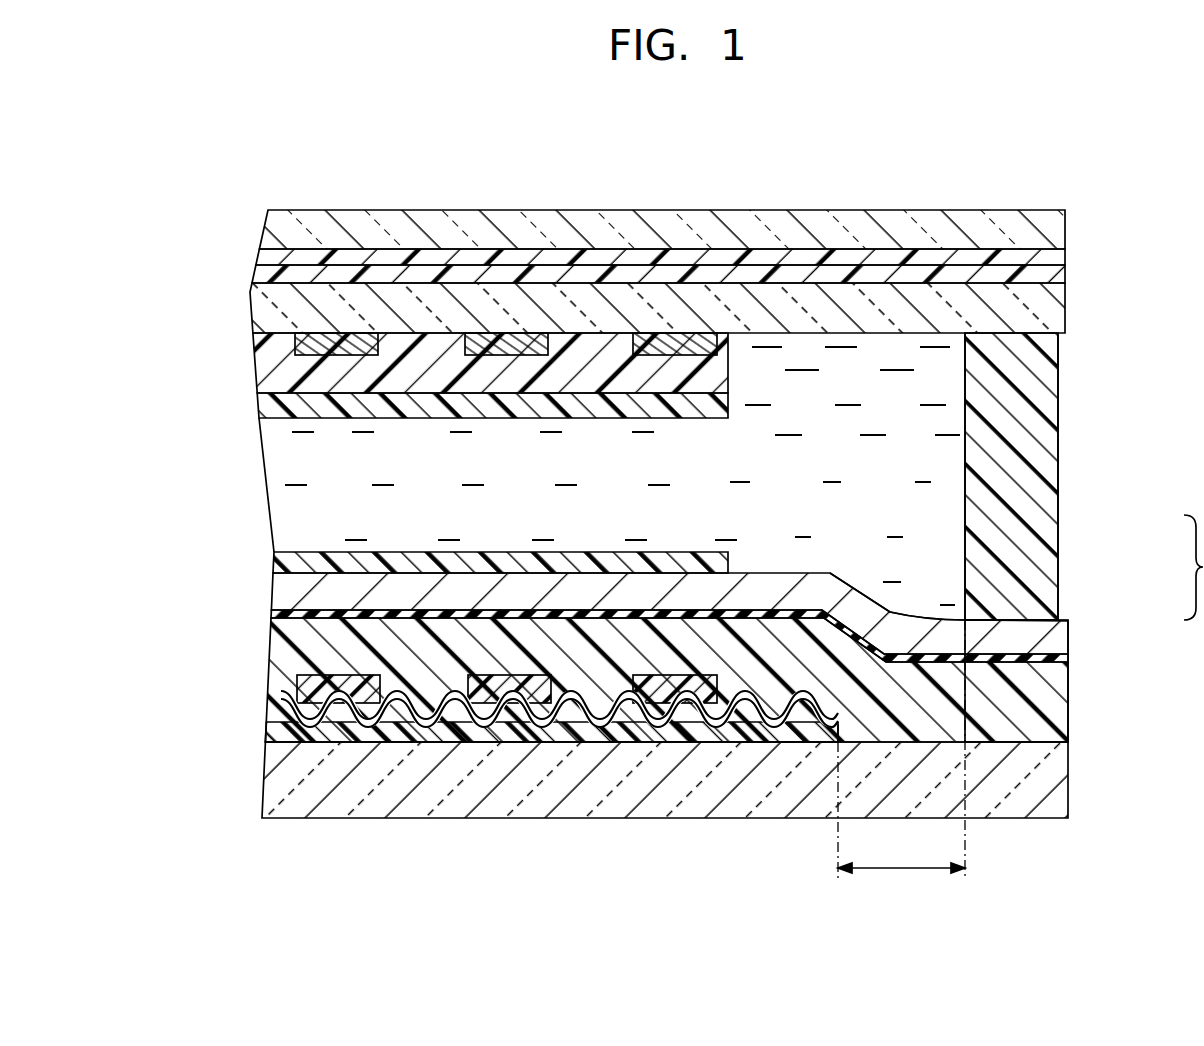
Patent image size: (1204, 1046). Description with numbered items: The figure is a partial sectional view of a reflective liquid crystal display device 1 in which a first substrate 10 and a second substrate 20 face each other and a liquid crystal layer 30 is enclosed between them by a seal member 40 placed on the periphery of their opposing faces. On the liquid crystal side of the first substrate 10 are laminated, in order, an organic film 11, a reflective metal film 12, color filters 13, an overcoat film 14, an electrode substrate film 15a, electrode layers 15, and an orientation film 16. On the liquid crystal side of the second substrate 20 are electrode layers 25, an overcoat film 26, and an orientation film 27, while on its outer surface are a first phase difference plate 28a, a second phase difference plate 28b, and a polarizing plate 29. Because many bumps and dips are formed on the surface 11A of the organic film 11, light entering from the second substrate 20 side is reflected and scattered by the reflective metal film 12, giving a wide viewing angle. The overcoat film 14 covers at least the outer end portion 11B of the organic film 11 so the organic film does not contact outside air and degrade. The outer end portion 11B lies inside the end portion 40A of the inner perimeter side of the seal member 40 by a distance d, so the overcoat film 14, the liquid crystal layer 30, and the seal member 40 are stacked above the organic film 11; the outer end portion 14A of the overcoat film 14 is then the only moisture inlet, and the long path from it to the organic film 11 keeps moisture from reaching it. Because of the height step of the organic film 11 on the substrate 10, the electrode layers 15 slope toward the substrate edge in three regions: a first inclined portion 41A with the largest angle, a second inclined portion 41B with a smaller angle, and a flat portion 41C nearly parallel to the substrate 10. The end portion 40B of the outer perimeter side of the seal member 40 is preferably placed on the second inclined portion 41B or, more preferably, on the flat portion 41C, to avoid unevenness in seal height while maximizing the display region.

The reflective liquid crystal display device 1 is at (1017, 182).
The first substrate 10 is at (284, 791).
The organic film 11 is at (290, 731).
The surface of the organic film 11A is at (756, 733).
The outer end portion of the organic film 11B is at (848, 730).
The reflective metal film 12 is at (282, 697).
The color filters 13 is at (343, 688).
The overcoat film 14 is at (292, 654).
The outer end portion of the overcoat film 14A is at (1068, 712).
The electrode layers 15 is at (292, 597).
The electrode substrate film 15a is at (284, 616).
The orientation film 16 is at (292, 563).
The second substrate 20 is at (262, 313).
The electrode layers 25 is at (345, 347).
The overcoat film 26 is at (268, 368).
The orientation film 27 is at (268, 412).
The first phase difference plate 28a is at (266, 277).
The second phase difference plate 28b is at (268, 259).
The polarizing plate 29 is at (272, 234).
The liquid crystal layer 30 is at (272, 468).
The seal member 40 is at (1032, 428).
The end portion of the inner perimeter side of the seal member 40A is at (958, 476).
The end portion of the outer perimeter side of the seal member 40B is at (1058, 394).
The first inclined portion 41A is at (858, 583).
The second inclined portion 41B is at (910, 612).
The flat portion 41C is at (1058, 596).